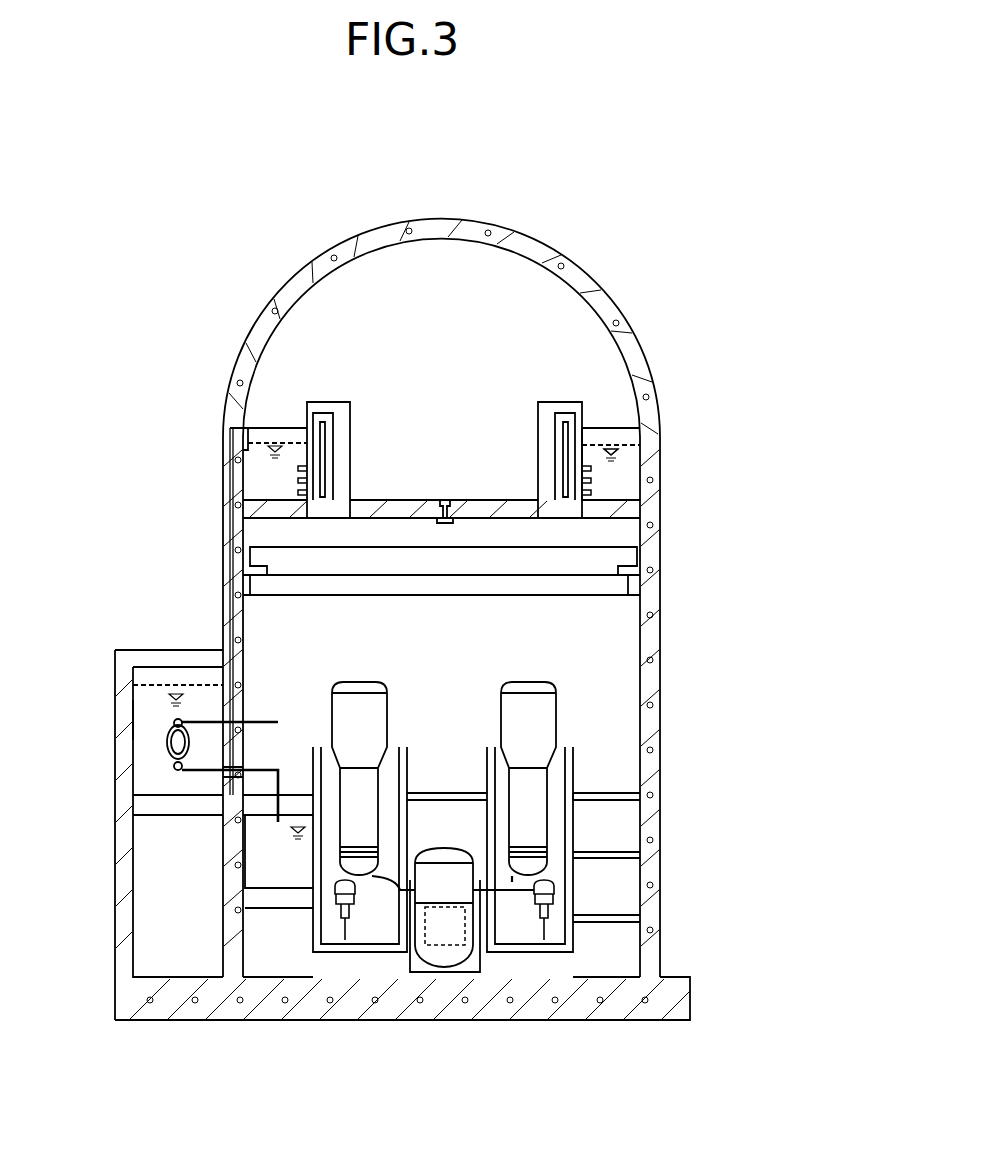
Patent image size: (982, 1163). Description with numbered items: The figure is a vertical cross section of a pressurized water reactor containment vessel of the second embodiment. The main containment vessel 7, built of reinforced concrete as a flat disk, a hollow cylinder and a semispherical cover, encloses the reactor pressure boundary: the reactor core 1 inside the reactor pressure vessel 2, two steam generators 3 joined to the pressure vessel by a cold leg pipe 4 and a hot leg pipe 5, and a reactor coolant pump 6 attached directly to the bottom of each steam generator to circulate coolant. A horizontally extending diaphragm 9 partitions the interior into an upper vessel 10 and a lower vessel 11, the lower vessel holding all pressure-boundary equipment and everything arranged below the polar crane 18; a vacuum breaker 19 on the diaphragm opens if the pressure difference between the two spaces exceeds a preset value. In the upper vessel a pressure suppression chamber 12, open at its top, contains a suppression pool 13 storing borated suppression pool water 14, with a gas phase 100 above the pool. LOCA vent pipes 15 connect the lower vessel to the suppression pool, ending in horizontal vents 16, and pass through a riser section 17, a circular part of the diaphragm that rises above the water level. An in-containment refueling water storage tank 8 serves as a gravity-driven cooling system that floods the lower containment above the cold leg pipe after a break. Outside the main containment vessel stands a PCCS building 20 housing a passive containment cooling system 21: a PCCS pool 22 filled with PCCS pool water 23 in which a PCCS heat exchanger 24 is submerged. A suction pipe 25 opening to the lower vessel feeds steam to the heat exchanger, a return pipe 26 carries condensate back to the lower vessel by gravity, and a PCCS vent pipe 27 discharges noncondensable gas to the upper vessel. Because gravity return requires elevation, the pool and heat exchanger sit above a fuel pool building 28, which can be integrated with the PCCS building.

The reactor core 1 is at (455, 945).
The reactor pressure vessel 2 is at (432, 970).
The steam generators 3 is at (347, 680).
The cold leg pipe 4 is at (512, 890).
The hot leg pipe 5 is at (397, 893).
The reactor coolant pump 6 is at (342, 940).
The main containment vessel 7 is at (647, 667).
The in-containment refueling water storage tank 8 is at (263, 872).
The diaphragm 9 is at (487, 500).
The upper vessel 10 is at (557, 317).
The lower vessel 11 is at (627, 697).
The pressure suppression chamber 12 is at (603, 413).
The suppression pool 13 is at (643, 457).
The suppression pool water 14 is at (623, 480).
The LOCA vent pipes 15 is at (573, 430).
The horizontal vents 16 is at (297, 480).
The riser section 17 is at (328, 443).
The polar crane 18 is at (602, 557).
The vacuum breaker 19 is at (445, 500).
The PCCS building 20 is at (178, 650).
The passive containment cooling system 21 is at (166, 717).
The PCCS pool 22 is at (130, 720).
The PCCS pool water 23 is at (148, 745).
The PCCS heat exchanger 24 is at (168, 755).
The suction pipe 25 is at (232, 657).
The return pipe 26 is at (222, 775).
The PCCS vent pipe 27 is at (228, 465).
The fuel pool building 28 is at (162, 952).
The gas phase 100 is at (623, 413).